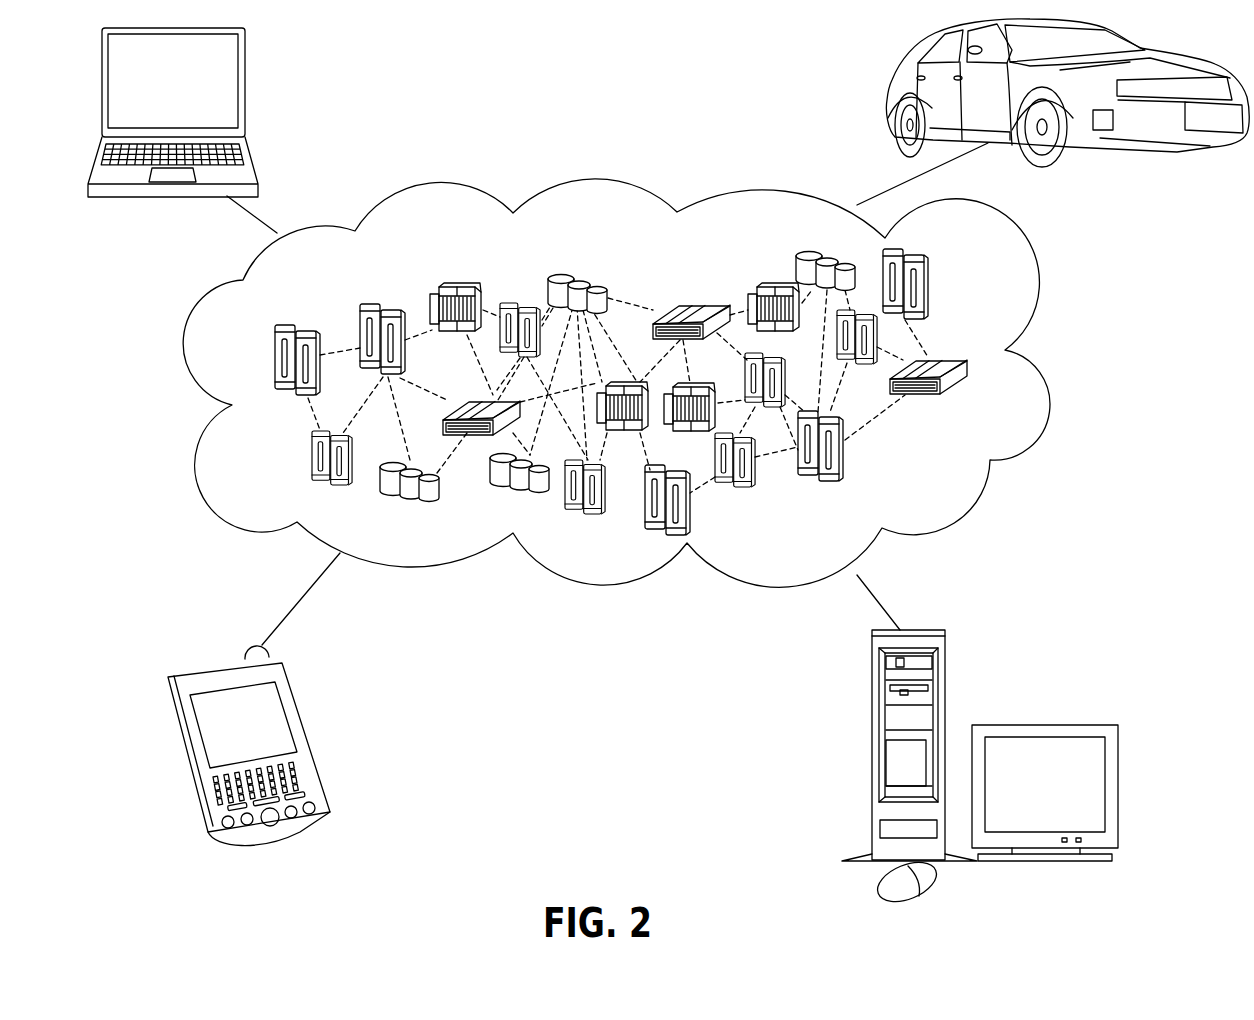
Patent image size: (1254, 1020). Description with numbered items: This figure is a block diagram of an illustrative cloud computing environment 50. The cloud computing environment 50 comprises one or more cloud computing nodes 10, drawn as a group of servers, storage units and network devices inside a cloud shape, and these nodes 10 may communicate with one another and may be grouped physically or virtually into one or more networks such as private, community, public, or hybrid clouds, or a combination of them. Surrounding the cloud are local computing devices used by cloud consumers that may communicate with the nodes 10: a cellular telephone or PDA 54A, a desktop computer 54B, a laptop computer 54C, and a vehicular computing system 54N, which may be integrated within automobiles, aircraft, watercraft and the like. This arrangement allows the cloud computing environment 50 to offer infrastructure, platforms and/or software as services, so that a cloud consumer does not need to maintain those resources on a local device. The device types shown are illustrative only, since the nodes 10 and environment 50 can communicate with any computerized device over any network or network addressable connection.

The cloud computing node 10 is at (945, 476).
The cloud computing environment 50 is at (1040, 375).
The cellular telephone or PDA 54A is at (298, 706).
The desktop computer 54B is at (870, 690).
The laptop computer 54C is at (245, 67).
The vehicular computing system 54N is at (888, 80).